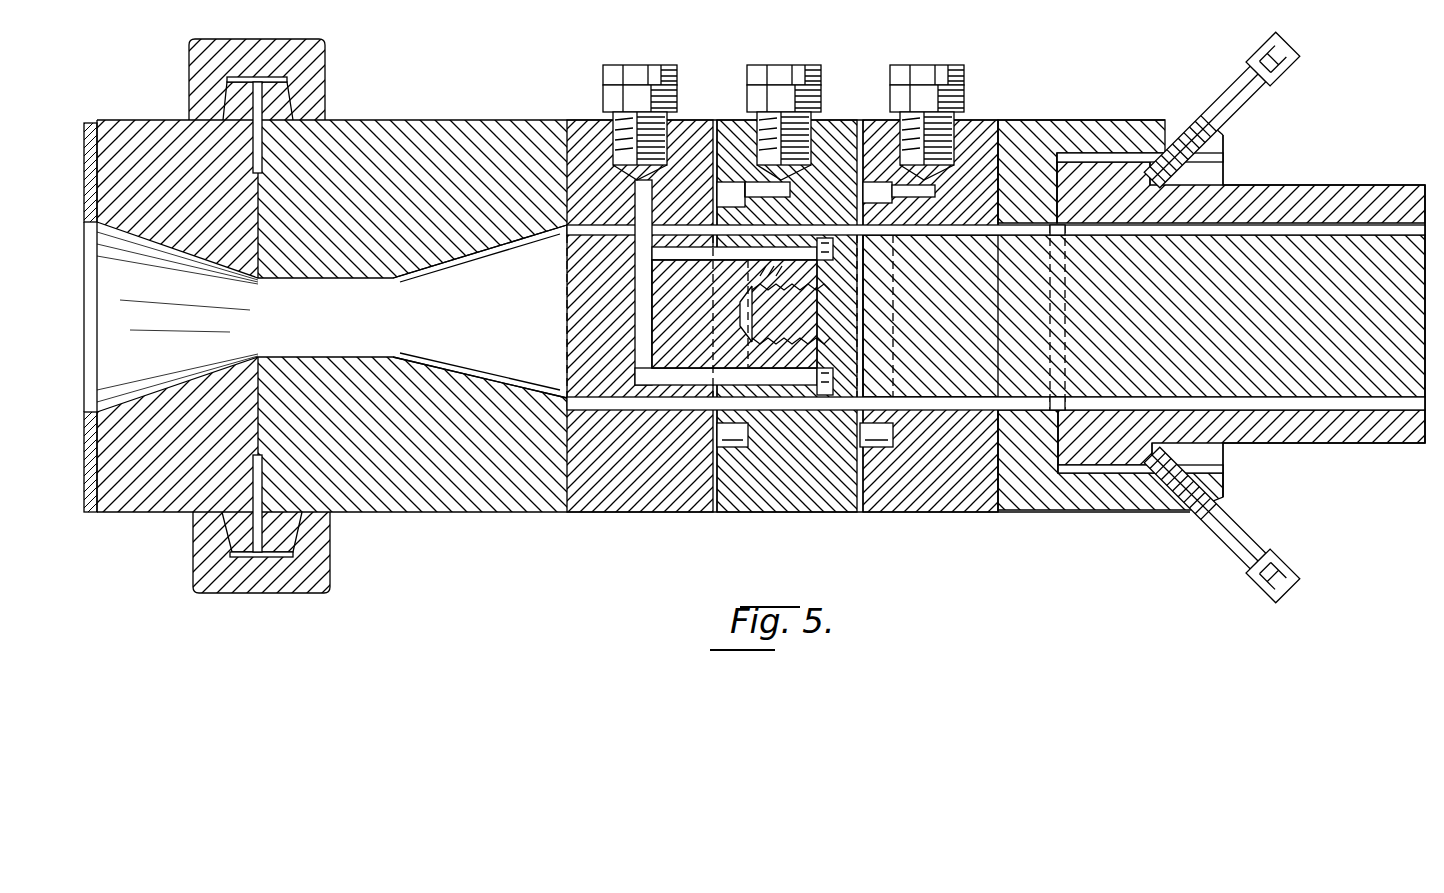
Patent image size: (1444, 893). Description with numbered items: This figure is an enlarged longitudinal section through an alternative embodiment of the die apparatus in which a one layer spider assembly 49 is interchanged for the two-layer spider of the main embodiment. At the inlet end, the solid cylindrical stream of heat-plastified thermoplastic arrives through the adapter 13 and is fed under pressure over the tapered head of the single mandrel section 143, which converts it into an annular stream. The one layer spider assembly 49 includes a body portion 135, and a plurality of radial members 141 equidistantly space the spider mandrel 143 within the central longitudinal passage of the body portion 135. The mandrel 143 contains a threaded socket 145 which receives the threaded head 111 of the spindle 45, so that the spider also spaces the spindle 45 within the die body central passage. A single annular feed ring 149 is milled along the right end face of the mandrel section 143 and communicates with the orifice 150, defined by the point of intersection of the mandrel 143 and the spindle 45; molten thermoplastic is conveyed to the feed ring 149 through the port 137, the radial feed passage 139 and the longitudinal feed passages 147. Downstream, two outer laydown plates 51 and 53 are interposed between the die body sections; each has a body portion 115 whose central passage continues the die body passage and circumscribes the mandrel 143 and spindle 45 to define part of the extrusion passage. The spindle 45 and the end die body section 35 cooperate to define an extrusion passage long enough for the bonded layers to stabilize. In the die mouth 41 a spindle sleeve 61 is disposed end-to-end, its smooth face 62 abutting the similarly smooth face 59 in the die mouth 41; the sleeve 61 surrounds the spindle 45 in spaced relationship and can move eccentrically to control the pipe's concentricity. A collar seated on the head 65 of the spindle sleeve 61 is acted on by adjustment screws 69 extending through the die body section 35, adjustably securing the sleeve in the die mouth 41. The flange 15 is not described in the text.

The adapter 13 is at (148, 137).
The mounting flange 15 is at (197, 64).
The end die body section 35 is at (1088, 135).
The die mouth 41 is at (1208, 163).
The spindle 45 is at (943, 302).
The one layer spider assembly 49 is at (588, 490).
The first laydown plate 51 is at (774, 513).
The second laydown plate 53 is at (932, 514).
The smooth face 59 is at (1055, 124).
The spindle sleeve 61 is at (1115, 441).
The smooth face 62 is at (1060, 193).
The head 65 is at (1136, 150).
The adjustment screws 69 is at (1217, 95).
The threaded head 111 is at (790, 290).
The body portion 115 is at (800, 477).
The body portion 135 is at (648, 497).
The port 137 is at (657, 180).
The radial feed passage 139 is at (645, 197).
The radial members 141 is at (617, 225).
The mandrel section 143 is at (468, 292).
The threaded socket 145 is at (772, 330).
The longitudinal feed passages 147 is at (676, 258).
The annular feed ring 149 is at (830, 235).
The orifice 150 is at (838, 245).